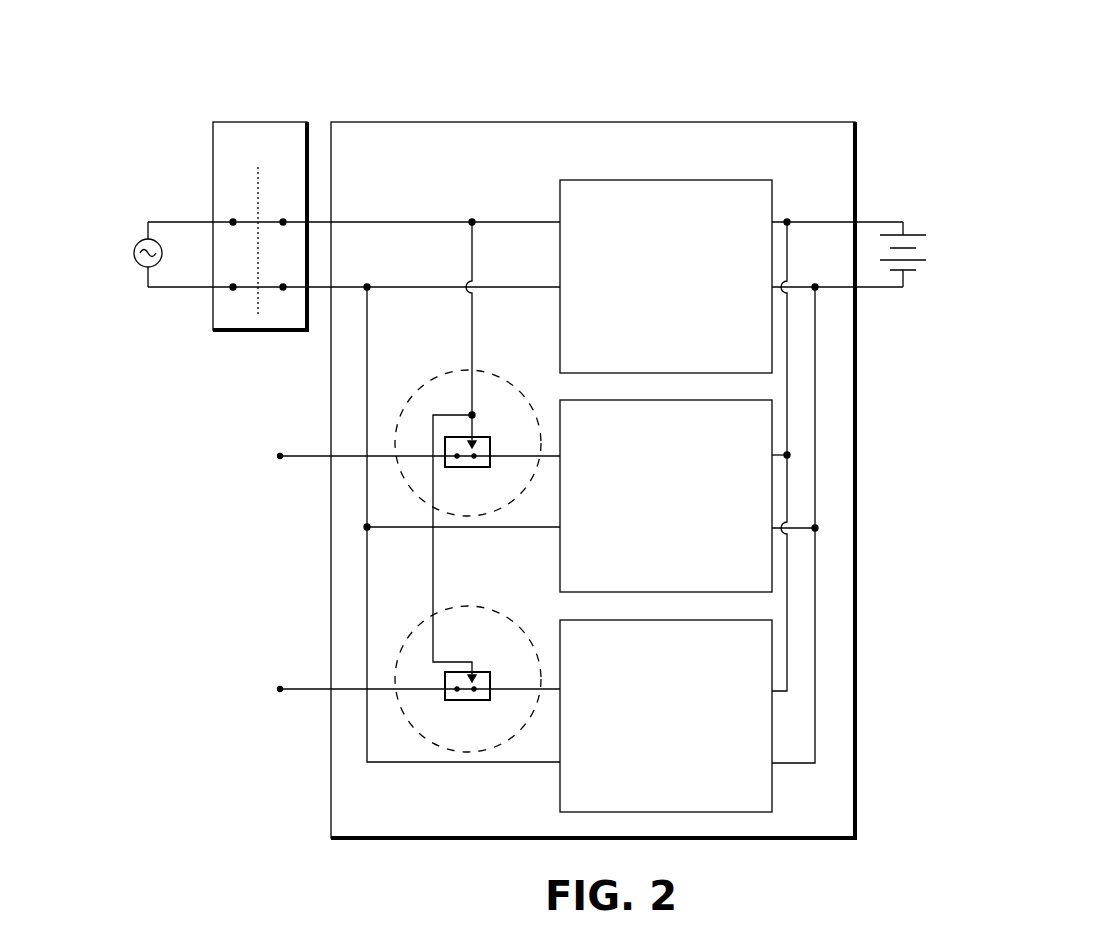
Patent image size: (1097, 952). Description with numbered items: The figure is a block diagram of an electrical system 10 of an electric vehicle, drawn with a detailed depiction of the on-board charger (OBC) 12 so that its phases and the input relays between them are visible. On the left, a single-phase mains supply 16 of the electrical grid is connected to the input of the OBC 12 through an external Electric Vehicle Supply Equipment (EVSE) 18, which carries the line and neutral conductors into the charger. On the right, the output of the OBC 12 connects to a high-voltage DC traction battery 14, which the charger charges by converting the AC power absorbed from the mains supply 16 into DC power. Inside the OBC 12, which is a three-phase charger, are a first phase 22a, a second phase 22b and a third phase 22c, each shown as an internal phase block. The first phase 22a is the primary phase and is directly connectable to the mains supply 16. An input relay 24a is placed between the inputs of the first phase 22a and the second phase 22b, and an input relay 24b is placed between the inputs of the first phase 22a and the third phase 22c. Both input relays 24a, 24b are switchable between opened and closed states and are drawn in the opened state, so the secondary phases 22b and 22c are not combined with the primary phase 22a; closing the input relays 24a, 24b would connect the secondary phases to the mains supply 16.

The electrical system 10 is at (767, 50).
The on-board charger 12 is at (578, 120).
The traction battery 14 is at (912, 232).
The mains supply 16 is at (112, 238).
The external Electric Vehicle Supply Equipment 18 is at (270, 120).
The first phase 22a is at (560, 306).
The second phase 22b is at (560, 547).
The third phase 22c is at (560, 772).
The input relay 24a is at (444, 447).
The input relay 24b is at (444, 680).